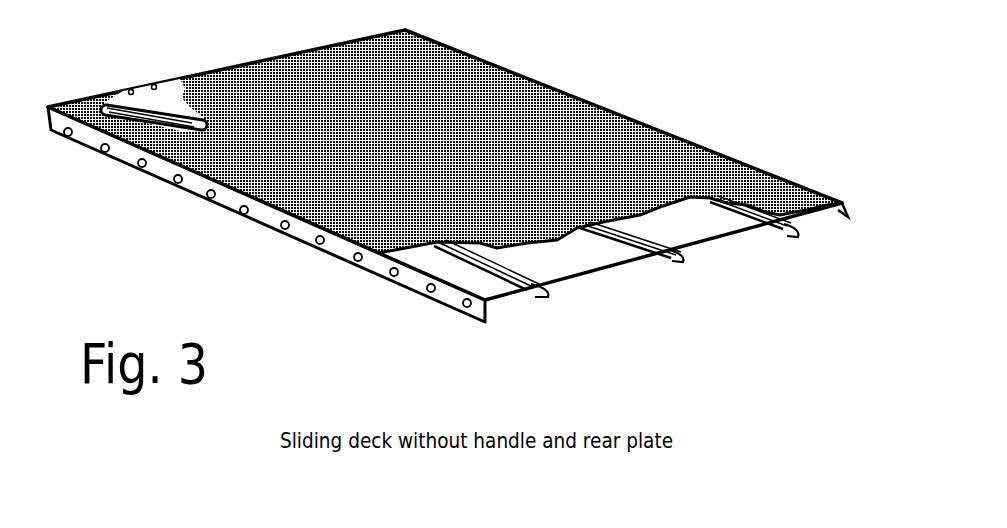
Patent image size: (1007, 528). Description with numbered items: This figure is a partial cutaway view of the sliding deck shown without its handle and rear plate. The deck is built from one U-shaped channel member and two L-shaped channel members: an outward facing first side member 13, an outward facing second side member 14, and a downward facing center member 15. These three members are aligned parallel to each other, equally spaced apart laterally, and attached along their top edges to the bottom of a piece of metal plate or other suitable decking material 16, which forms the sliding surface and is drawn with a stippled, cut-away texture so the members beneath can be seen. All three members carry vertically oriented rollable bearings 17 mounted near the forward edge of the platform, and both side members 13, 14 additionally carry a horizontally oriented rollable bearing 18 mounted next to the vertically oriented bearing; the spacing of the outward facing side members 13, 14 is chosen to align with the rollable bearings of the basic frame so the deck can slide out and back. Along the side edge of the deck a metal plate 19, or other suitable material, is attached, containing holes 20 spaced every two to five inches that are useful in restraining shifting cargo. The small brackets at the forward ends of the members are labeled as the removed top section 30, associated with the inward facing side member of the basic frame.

The outward facing first side member 13 is at (503, 265).
The outward facing second side member 14 is at (781, 232).
The downward facing center member 15 is at (677, 253).
The decking material 16 is at (458, 73).
The vertically oriented rollable bearings 17 is at (131, 106).
The horizontally oriented rollable bearing 18 is at (119, 100).
The metal plate 19 is at (380, 278).
The holes 20 is at (244, 214).
The removed top section 30 is at (548, 295).